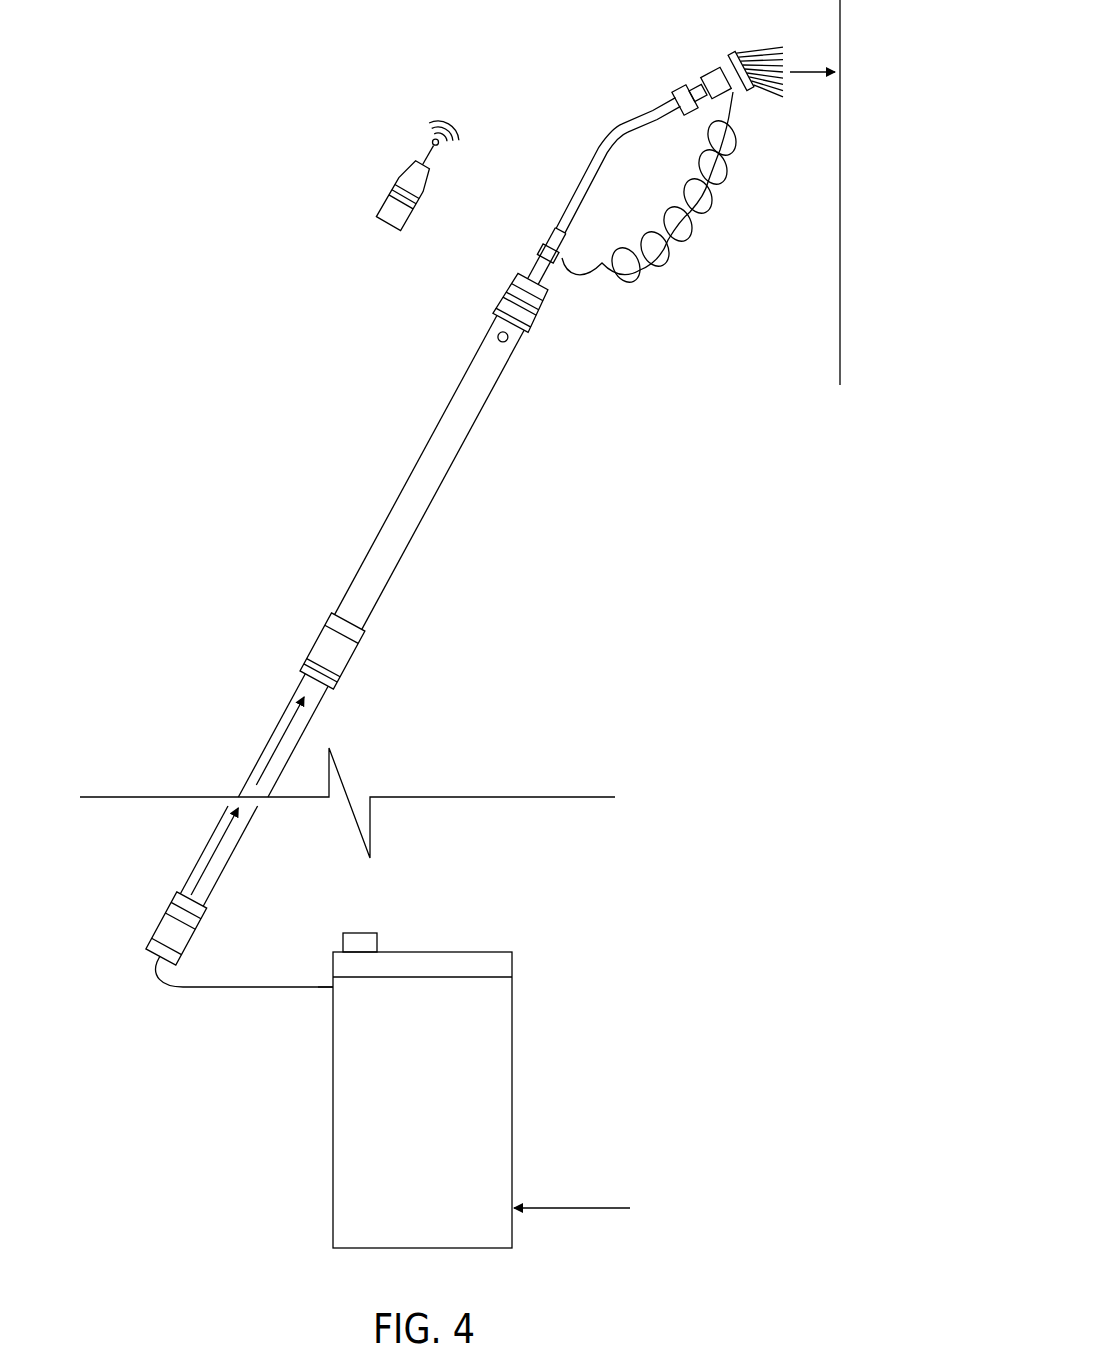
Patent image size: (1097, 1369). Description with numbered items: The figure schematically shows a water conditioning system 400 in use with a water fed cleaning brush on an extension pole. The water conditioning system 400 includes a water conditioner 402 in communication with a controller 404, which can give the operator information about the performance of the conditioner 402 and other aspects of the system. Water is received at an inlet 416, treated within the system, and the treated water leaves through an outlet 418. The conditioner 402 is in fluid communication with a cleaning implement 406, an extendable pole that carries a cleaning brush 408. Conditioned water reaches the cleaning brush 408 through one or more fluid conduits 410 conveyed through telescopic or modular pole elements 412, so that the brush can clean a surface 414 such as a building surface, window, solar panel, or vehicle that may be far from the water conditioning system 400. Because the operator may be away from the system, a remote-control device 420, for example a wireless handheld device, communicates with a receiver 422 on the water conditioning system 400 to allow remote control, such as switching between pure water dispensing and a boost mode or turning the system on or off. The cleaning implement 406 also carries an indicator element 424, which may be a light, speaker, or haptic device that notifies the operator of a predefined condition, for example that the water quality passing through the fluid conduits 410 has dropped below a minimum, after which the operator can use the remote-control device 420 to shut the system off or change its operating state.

The water conditioning system 400 is at (444, 1059).
The water conditioner 402 is at (514, 1034).
The controller 404 is at (513, 963).
The cleaning implement 406 is at (503, 244).
The cleaning brush 408 is at (750, 47).
The fluid conduits 410 is at (700, 238).
The pole elements 412 is at (461, 378).
The surface 414 is at (838, 350).
The inlet 416 is at (523, 1185).
The outlet 418 is at (318, 997).
The remote-control device 420 is at (392, 192).
The receiver 422 is at (357, 930).
The indicator element 424 is at (509, 341).